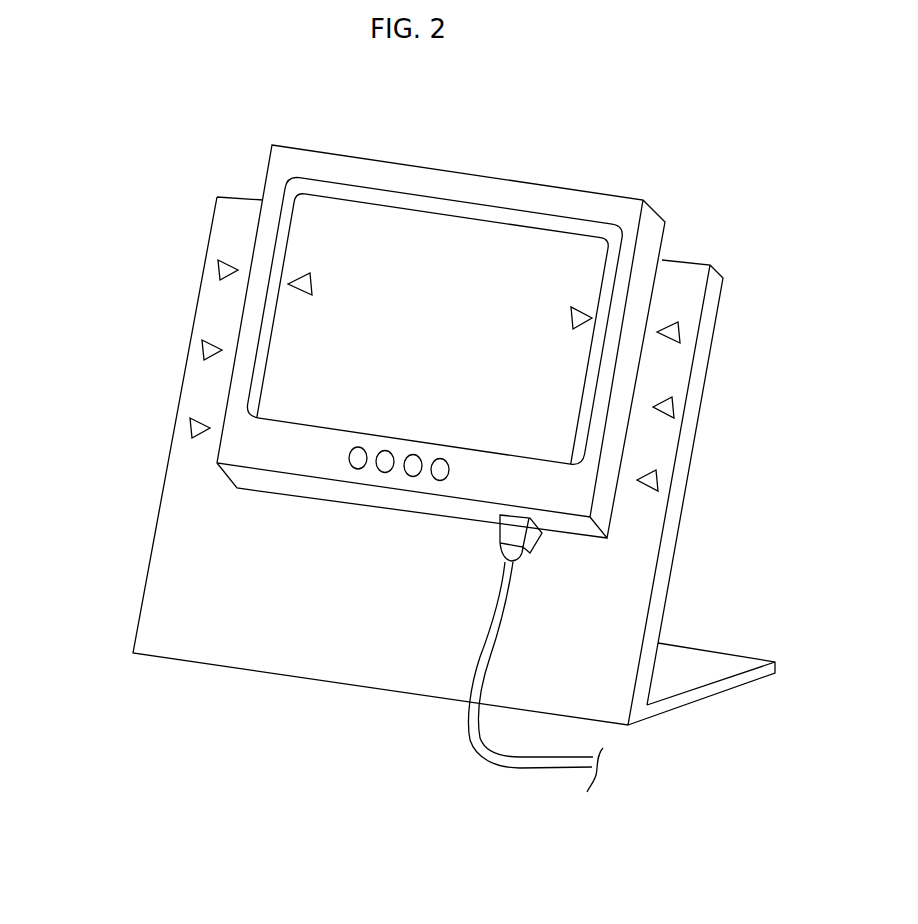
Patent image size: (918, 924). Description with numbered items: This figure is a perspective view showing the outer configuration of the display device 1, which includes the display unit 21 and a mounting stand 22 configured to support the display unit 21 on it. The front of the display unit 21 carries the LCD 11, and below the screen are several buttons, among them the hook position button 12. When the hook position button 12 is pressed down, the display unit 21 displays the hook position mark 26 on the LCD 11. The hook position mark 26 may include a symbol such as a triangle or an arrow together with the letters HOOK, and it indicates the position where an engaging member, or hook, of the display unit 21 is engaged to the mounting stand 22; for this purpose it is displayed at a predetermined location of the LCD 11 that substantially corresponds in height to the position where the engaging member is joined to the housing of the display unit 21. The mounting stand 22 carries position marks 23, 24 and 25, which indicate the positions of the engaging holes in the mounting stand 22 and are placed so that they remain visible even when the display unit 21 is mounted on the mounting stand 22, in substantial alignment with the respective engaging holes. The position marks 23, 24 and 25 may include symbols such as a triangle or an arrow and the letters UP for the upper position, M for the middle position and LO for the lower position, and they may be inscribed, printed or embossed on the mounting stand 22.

The display device 1 is at (733, 207).
The LCD 11 is at (423, 252).
The hook position button 12 is at (350, 458).
The display unit 21 is at (381, 165).
The mounting stand 22 is at (663, 593).
The position mark 23 is at (682, 333).
The position mark 24 is at (672, 408).
The position mark 25 is at (655, 482).
The hook position mark 26 is at (548, 297).